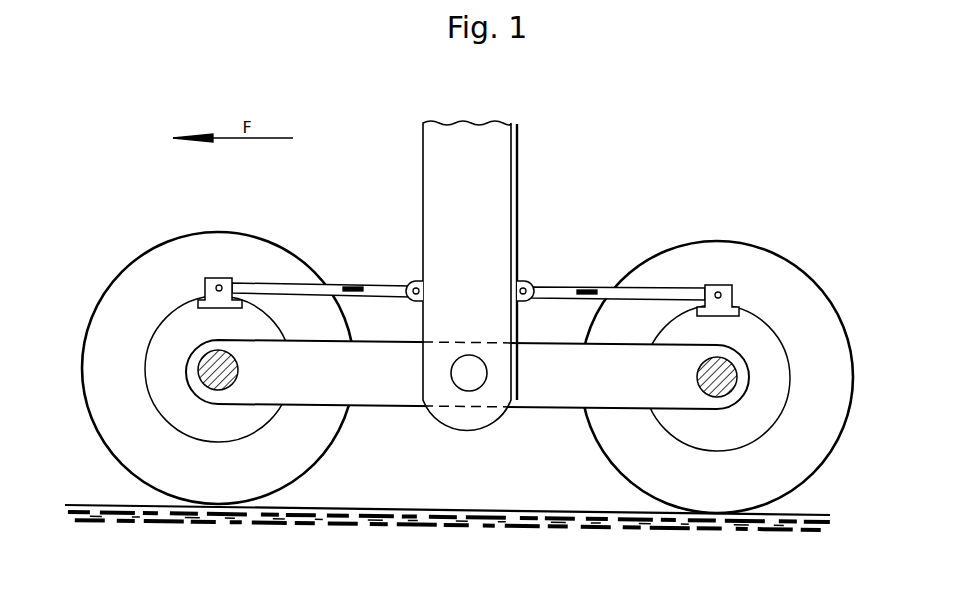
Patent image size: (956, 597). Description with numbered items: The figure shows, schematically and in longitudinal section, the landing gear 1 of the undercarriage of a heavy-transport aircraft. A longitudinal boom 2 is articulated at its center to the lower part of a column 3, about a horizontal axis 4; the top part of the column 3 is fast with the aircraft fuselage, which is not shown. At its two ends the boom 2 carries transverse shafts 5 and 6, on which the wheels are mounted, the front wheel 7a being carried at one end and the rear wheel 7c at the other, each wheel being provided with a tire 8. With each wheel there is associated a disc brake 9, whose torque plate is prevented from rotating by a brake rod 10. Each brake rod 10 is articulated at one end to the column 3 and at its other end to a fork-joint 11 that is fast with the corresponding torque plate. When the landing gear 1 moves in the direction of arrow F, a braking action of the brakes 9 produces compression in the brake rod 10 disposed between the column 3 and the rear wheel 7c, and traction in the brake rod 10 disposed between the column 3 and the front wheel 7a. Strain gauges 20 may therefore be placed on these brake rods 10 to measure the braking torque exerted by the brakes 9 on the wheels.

The landing gear 1 is at (348, 195).
The longitudinal boom 2 is at (392, 382).
The column 3 is at (478, 172).
The horizontal axis 4 is at (467, 378).
The transverse shaft 5 is at (218, 370).
The transverse shaft 6 is at (708, 381).
The front wheel 7a is at (219, 448).
The rear wheel 7c is at (718, 463).
The tire 8 is at (157, 272).
The disc brake 9 is at (167, 392).
The brake rod 10 is at (382, 287).
The fork-joint 11 is at (222, 280).
The strain gauge 20 is at (350, 285).